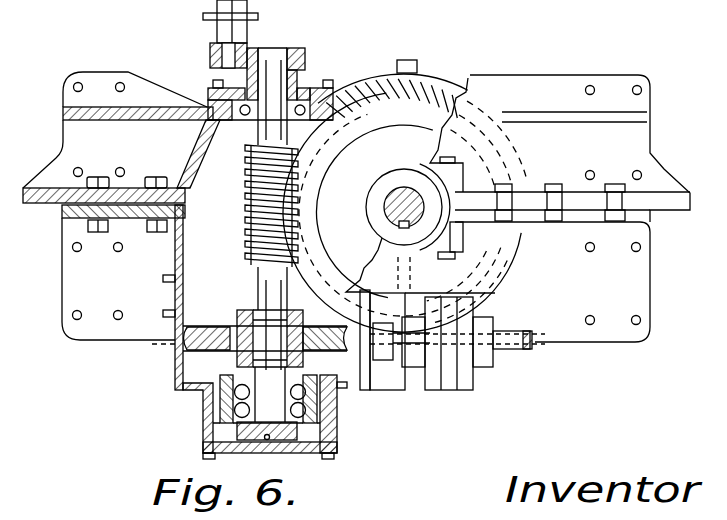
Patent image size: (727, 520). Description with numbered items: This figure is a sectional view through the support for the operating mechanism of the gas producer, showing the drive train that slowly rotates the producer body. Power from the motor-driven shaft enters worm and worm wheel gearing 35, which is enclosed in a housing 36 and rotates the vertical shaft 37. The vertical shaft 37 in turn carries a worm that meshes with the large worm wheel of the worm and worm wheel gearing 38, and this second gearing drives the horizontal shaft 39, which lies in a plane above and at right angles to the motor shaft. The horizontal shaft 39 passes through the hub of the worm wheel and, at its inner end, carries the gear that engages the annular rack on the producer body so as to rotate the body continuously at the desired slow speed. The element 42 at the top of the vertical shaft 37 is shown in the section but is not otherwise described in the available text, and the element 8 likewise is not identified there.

The drive shaft 8 is at (344, 340).
The worm and worm wheel gearing 35 is at (349, 388).
The housing 36 is at (178, 386).
The vertical shaft 37 is at (258, 289).
The worm and worm wheel gearing 38 is at (310, 229).
The horizontal shaft 39 is at (392, 198).
The adjusting pin 42 is at (248, 25).